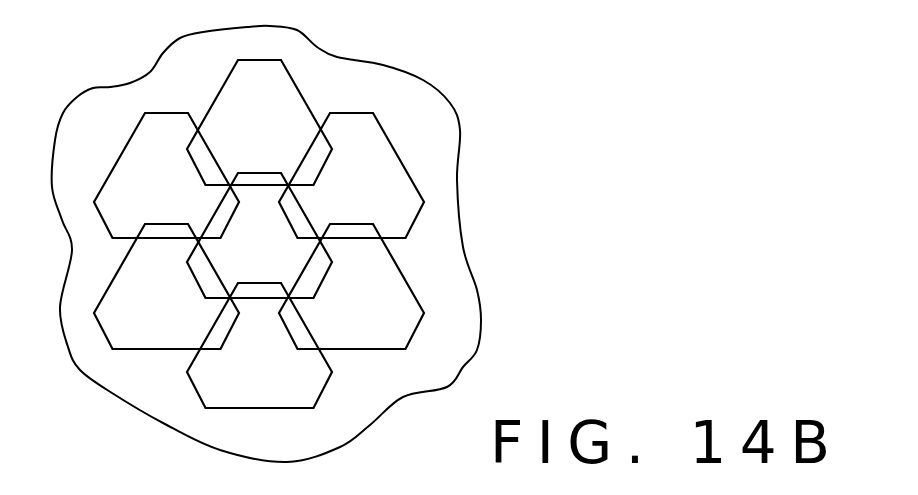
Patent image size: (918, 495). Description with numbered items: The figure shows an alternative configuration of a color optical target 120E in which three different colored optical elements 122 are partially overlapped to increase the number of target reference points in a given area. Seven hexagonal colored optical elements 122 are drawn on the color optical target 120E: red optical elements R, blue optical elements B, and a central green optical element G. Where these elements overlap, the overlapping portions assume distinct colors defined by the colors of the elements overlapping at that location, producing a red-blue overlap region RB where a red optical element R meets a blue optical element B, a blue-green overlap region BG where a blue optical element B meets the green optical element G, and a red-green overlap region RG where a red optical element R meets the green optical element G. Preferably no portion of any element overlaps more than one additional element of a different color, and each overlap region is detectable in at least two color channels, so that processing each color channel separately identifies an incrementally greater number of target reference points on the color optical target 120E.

The color optical target 120E is at (413, 114).
The colored optical element 122 is at (290, 223).
The red optical element R is at (268, 145).
The green optical element G is at (268, 254).
The blue optical element B is at (164, 189).
The red-blue overlap region RB is at (205, 163).
The blue-green overlap region BG is at (227, 213).
The red-green overlap region RG is at (265, 177).